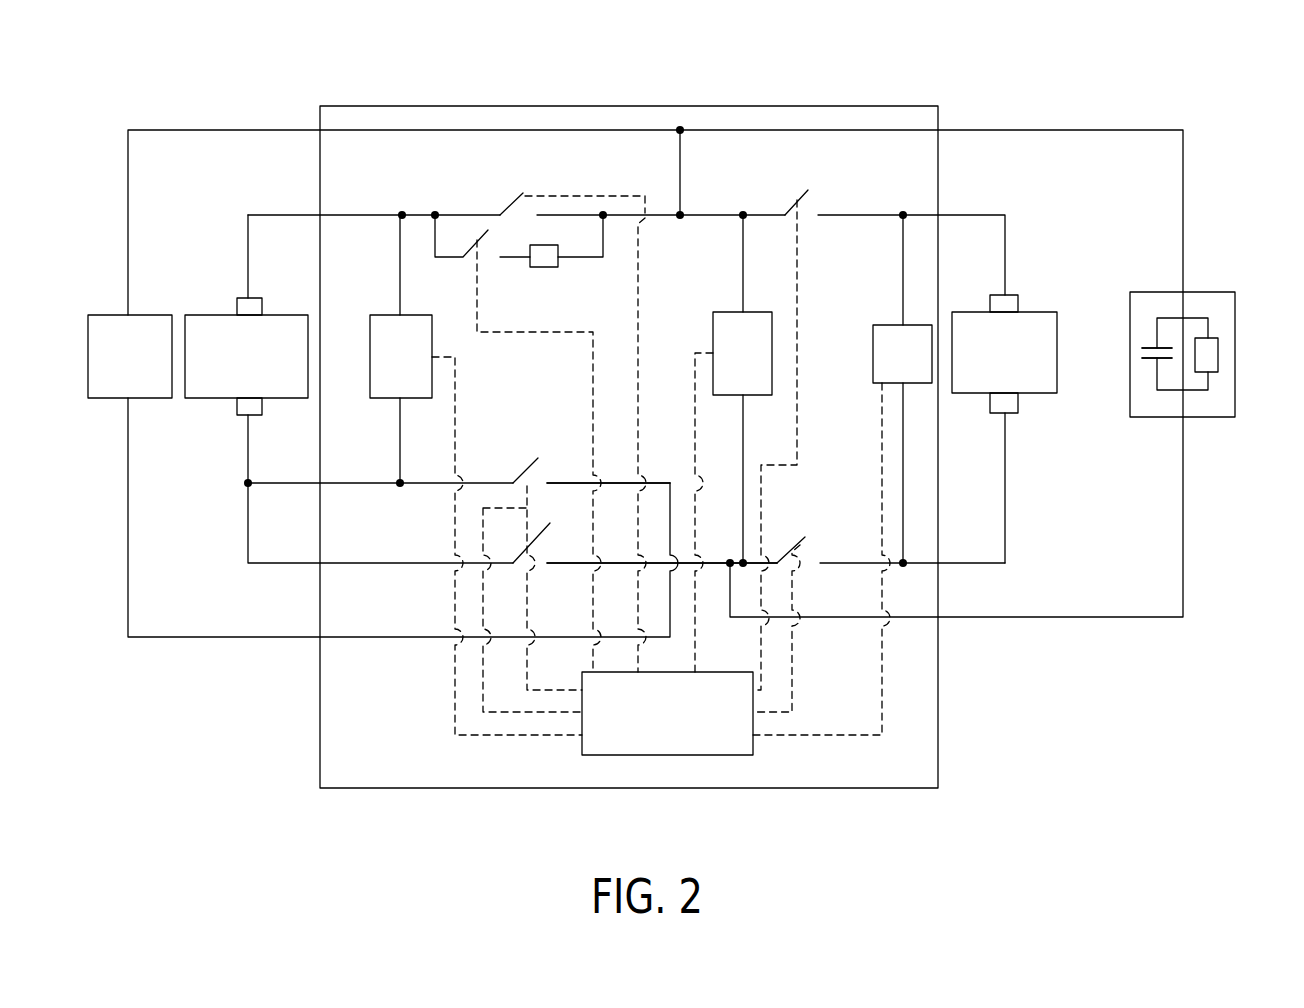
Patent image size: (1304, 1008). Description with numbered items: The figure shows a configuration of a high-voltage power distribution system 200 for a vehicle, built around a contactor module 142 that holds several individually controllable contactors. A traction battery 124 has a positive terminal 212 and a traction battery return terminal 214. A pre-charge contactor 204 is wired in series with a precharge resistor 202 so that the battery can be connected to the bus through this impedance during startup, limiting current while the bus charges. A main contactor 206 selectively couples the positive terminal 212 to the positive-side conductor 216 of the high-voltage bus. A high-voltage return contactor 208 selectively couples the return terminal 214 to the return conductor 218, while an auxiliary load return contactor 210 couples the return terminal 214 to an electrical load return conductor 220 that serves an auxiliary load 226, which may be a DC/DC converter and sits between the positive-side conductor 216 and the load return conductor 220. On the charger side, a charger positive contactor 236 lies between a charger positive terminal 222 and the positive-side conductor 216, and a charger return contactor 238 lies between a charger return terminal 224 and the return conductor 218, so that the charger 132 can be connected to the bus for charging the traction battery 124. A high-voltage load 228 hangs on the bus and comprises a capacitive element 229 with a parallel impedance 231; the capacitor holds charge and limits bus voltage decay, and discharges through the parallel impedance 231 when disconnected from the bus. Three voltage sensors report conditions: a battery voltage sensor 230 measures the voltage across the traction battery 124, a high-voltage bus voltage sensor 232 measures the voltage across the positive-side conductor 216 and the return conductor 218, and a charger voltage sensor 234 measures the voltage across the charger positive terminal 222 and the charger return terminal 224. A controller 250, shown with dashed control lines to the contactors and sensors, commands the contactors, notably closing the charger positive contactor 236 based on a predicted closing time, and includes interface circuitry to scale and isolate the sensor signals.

The high-voltage power distribution system 200 is at (1078, 82).
The contactor module 142 is at (940, 116).
The traction battery 124 is at (200, 320).
The charger 132 is at (1032, 320).
The precharge resistor 202 is at (548, 268).
The pre-charge contactor 204 is at (487, 232).
The main contactor 206 is at (523, 190).
The high-voltage return contactor 208 is at (532, 542).
The auxiliary load return contactor 210 is at (533, 465).
The positive terminal 212 is at (242, 300).
The traction battery return terminal 214 is at (242, 413).
The positive-side conductor 216 is at (668, 212).
The return conductor 218 is at (718, 562).
The electrical load return conductor 220 is at (632, 480).
The charger positive terminal 222 is at (1010, 300).
The charger return terminal 224 is at (1018, 405).
The auxiliary load 226 is at (88, 362).
The high-voltage load 228 is at (1200, 292).
The capacitive element 229 is at (1152, 345).
The battery voltage sensor 230 is at (388, 315).
The parallel impedance 231 is at (1218, 355).
The high-voltage bus voltage sensor 232 is at (725, 312).
The charger voltage sensor 234 is at (890, 325).
The charger positive contactor 236 is at (808, 190).
The charger return contactor 238 is at (800, 540).
The controller 250 is at (668, 755).